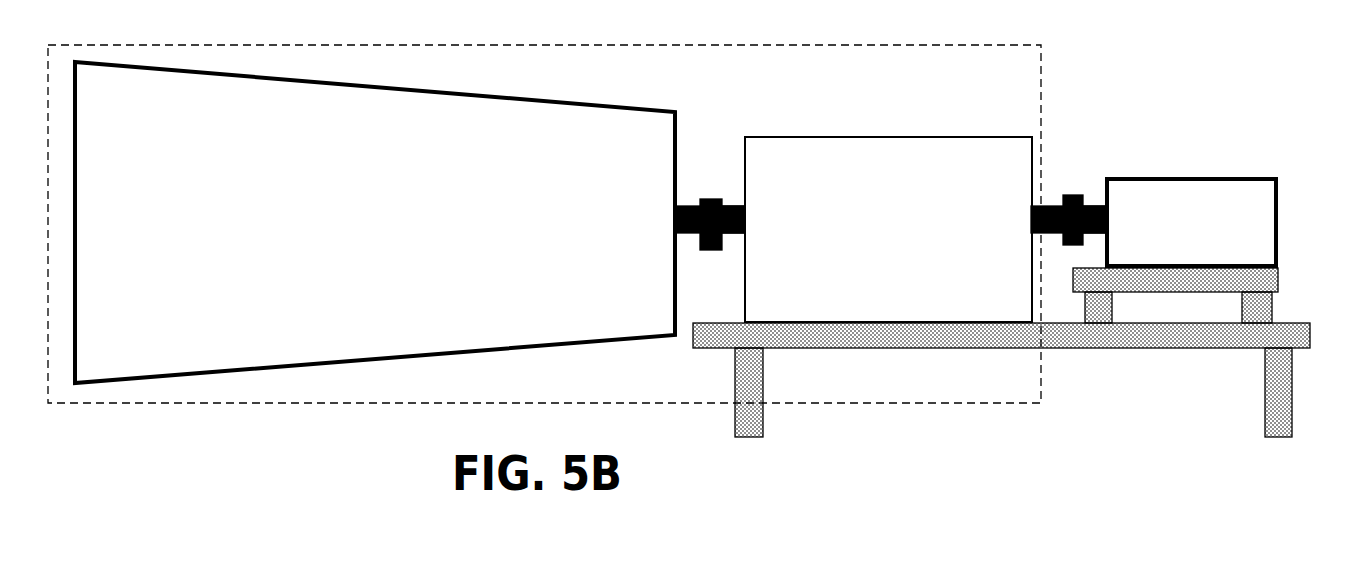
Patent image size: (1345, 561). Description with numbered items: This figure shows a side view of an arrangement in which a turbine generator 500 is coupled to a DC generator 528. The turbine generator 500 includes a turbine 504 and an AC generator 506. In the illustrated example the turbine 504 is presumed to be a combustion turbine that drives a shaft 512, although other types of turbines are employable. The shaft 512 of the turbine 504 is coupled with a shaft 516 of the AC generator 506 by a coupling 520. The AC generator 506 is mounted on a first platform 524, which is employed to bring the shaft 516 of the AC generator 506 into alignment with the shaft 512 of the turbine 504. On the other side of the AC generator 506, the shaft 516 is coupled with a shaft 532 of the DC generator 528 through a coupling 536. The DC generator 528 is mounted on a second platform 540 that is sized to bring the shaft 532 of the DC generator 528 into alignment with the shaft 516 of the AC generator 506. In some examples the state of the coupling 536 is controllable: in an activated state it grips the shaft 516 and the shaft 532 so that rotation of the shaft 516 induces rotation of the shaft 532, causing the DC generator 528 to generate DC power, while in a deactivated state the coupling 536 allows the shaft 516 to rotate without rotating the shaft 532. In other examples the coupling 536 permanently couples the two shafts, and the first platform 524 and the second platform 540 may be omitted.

The turbine generator 500 is at (677, 80).
The turbine 504 is at (442, 236).
The AC generator 506 is at (990, 242).
The shaft 512 is at (690, 206).
The shaft 516 is at (737, 236).
The coupling 520 is at (700, 252).
The first platform 524 is at (935, 348).
The DC generator 528 is at (1210, 263).
The shaft 532 is at (1088, 200).
The coupling 536 is at (1063, 246).
The second platform 540 is at (1276, 283).